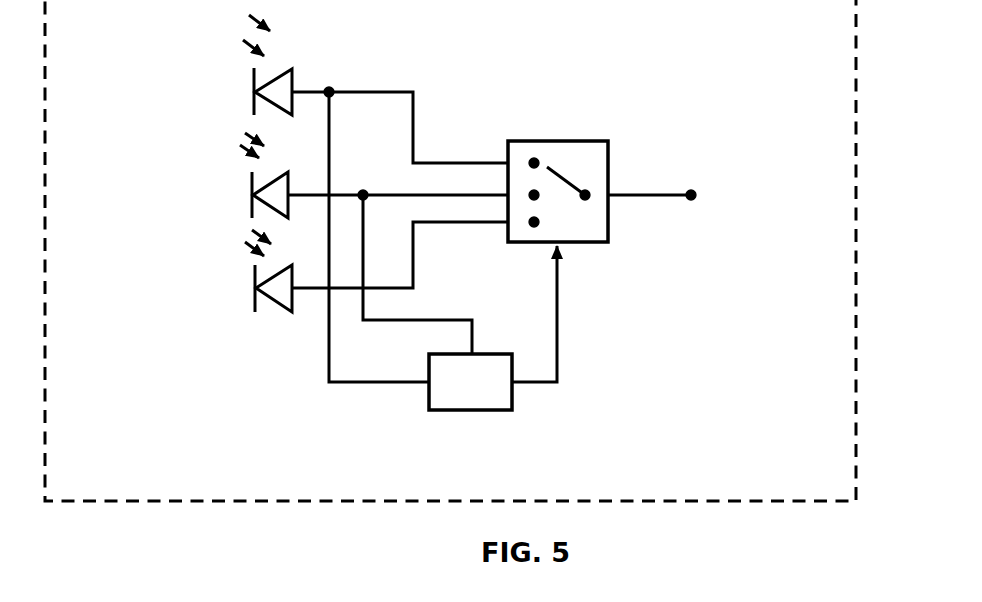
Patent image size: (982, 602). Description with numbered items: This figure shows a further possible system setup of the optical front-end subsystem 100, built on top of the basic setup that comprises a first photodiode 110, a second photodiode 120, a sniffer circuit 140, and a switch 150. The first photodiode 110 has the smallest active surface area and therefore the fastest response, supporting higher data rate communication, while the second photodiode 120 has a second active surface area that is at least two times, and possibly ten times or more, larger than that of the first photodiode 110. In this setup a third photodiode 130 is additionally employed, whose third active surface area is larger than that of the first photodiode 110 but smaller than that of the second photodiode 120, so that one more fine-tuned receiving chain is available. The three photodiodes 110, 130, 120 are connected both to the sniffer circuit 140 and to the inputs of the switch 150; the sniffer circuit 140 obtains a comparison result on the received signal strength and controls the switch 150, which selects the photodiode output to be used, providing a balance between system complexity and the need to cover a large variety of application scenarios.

The optical front-end subsystem 100 is at (875, 113).
The first photodiode 110 is at (237, 97).
The second photodiode 120 is at (238, 293).
The third photodiode 130 is at (233, 200).
The sniffer circuit 140 is at (478, 423).
The switch 150 is at (567, 128).